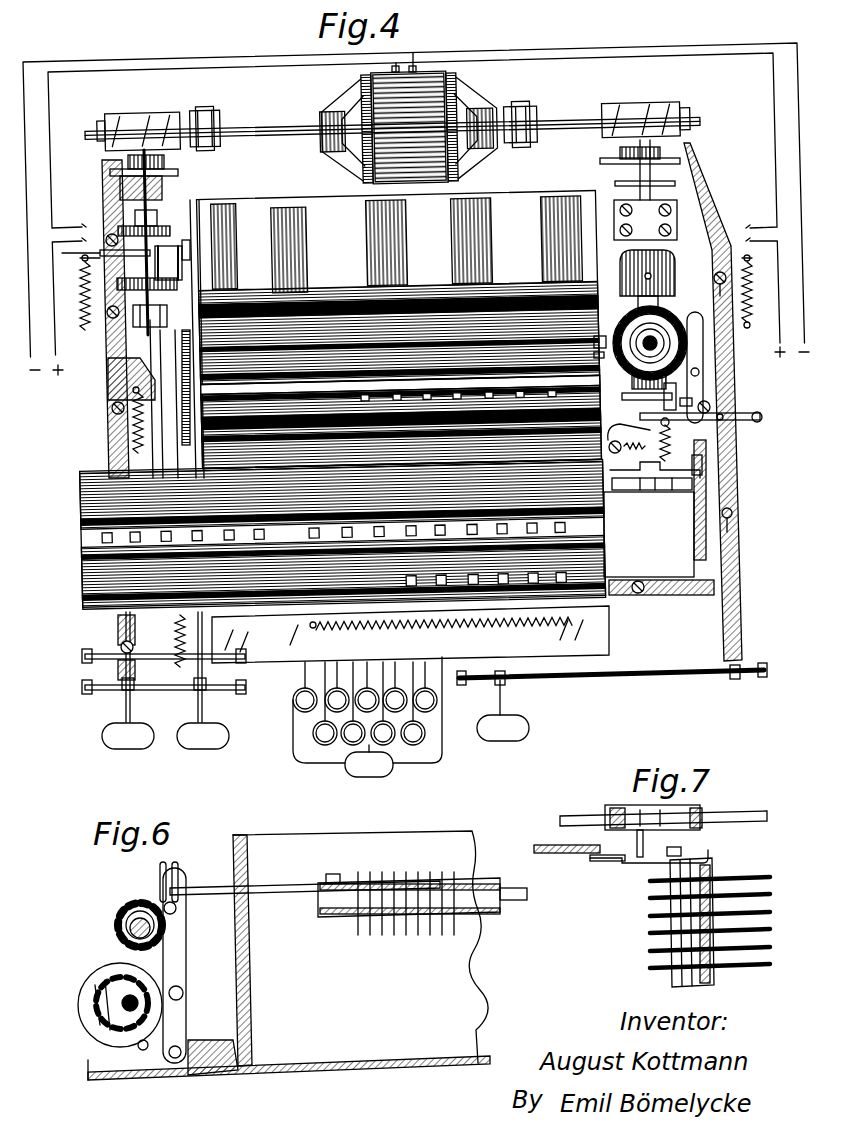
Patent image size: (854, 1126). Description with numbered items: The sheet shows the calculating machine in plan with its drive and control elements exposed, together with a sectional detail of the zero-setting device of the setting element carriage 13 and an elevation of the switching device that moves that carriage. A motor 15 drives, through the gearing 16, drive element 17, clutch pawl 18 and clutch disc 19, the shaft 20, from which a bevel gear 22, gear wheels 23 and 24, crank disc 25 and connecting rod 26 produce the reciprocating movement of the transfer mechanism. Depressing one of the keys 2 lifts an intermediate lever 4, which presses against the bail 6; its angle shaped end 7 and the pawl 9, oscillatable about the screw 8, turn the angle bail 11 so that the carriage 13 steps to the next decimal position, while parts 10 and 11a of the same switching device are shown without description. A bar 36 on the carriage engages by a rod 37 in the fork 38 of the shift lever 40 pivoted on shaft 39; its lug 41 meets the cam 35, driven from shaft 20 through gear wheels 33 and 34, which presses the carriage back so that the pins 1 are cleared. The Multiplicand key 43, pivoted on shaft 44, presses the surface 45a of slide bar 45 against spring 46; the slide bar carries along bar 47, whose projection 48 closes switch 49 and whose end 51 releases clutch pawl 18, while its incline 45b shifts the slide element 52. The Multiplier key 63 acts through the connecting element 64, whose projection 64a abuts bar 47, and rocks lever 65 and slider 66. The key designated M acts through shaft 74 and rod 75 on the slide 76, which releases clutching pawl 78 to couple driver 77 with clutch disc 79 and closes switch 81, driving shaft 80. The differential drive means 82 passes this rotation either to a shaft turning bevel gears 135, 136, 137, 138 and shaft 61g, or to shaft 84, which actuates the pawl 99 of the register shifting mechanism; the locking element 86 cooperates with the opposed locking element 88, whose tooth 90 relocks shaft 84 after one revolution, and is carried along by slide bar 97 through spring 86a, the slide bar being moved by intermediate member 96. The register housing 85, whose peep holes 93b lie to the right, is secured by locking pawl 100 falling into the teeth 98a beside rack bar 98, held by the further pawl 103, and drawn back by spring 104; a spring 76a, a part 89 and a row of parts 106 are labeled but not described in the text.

In FIG. 6, the pins 1 is at (432, 940).
In FIG. 4, the keys 2 is at (313, 735).
In FIG. 7, the intermediate lever 4 is at (745, 881).
In FIG. 7, the bail 6 is at (709, 860).
In FIG. 4, the angle shaped end 7 is at (522, 743).
In FIG. 7, the angle shaped end 7 is at (620, 848).
In FIG. 7, the screw 8 is at (575, 878).
In FIG. 7, the pawl 9 is at (605, 872).
In FIG. 7, the stem 10 is at (645, 843).
In FIG. 7, the angle bail 11 is at (683, 824).
In FIG. 7, the shaft sleeve 11a is at (612, 800).
In FIG. 6, the setting element carriage 13 is at (328, 920).
In FIG. 4, the motor 15 is at (408, 120).
In FIG. 4, the gearing 16 is at (155, 130).
In FIG. 4, the drive element 17 is at (166, 165).
In FIG. 4, the clutch pawl 18 is at (178, 172).
In FIG. 4, the clutch disc 19 is at (160, 178).
In FIG. 4, the shaft 20 is at (128, 217).
In FIG. 6, the shaft 20 is at (130, 928).
In FIG. 4, the bevel gear 22 is at (200, 292).
In FIG. 4, the gear wheel 23 is at (197, 283).
In FIG. 4, the gear wheel 24 is at (200, 398).
In FIG. 4, the crank disc 25 is at (213, 410).
In FIG. 4, the connecting rod 26 is at (145, 480).
In FIG. 6, the gear wheel 33 is at (128, 902).
In FIG. 6, the gear wheel 34 is at (141, 1047).
In FIG. 6, the cam 35 is at (95, 987).
In FIG. 6, the bar 36 is at (267, 888).
In FIG. 6, the rod 37 is at (176, 892).
In FIG. 6, the fork 38 is at (159, 875).
In FIG. 6, the shaft 39 is at (176, 1060).
In FIG. 6, the shift lever 40 is at (174, 968).
In FIG. 6, the lug 41 is at (184, 992).
In FIG. 4, the Multiplicand key 43 is at (143, 750).
In FIG. 4, the shaft 44 is at (172, 691).
In FIG. 4, the slide bar 45 is at (122, 440).
In FIG. 4, the surface 45a is at (137, 672).
In FIG. 4, the incline 45b is at (140, 373).
In FIG. 4, the spring 46 is at (127, 438).
In FIG. 4, the bar 47 is at (107, 338).
In FIG. 4, the projection 48 is at (85, 264).
In FIG. 4, the switch 49 is at (82, 229).
In FIG. 4, the end 51 is at (105, 168).
In FIG. 4, the slide element 52 is at (140, 374).
In FIG. 4, the shaft 61g is at (596, 352).
In FIG. 4, the Multiplier key 63 is at (210, 750).
In FIG. 4, the connecting element 64 is at (187, 267).
In FIG. 4, the projection 64a is at (176, 245).
In FIG. 4, the lever 65 is at (192, 230).
In FIG. 4, the slider 66 is at (193, 248).
In FIG. 4, the shaft 74 is at (612, 680).
In FIG. 4, the rod 75 is at (733, 682).
In FIG. 4, the slide 76 is at (697, 183).
In FIG. 4, the spring 76a is at (750, 262).
In FIG. 4, the driver 77 is at (670, 145).
In FIG. 4, the clutching pawl 78 is at (622, 156).
In FIG. 4, the clutch disc 79 is at (612, 165).
In FIG. 4, the shaft 80 is at (622, 212).
In FIG. 4, the switch 81 is at (765, 222).
In FIG. 4, the differential drive means 82 is at (660, 275).
In FIG. 4, the shaft 84 is at (640, 430).
In FIG. 4, the housing 85 is at (618, 303).
In FIG. 4, the locking element 86 is at (686, 389).
In FIG. 4, the spring 86a is at (700, 457).
In FIG. 4, the locking element 88 is at (632, 396).
In FIG. 4, the lever 89 is at (699, 348).
In FIG. 4, the tooth 90 is at (700, 404).
In FIG. 4, the peep holes 93b is at (503, 628).
In FIG. 4, the intermediate member 96 is at (690, 594).
In FIG. 4, the slide bar 97 is at (695, 512).
In FIG. 4, the rack bar 98 is at (614, 484).
In FIG. 4, the second row of teeth 98a is at (703, 468).
In FIG. 4, the pawl 99 is at (656, 482).
In FIG. 4, the locking pawl 100 is at (610, 440).
In FIG. 4, the further pawl 103 is at (760, 417).
In FIG. 4, the spring 104 is at (416, 632).
In FIG. 4, the type 106 is at (460, 393).
In FIG. 4, the bevel gear 135 is at (680, 304).
In FIG. 4, the bevel gear 136 is at (581, 270).
In FIG. 4, the bevel gear 137 is at (620, 303).
In FIG. 4, the bevel gear 138 is at (594, 338).